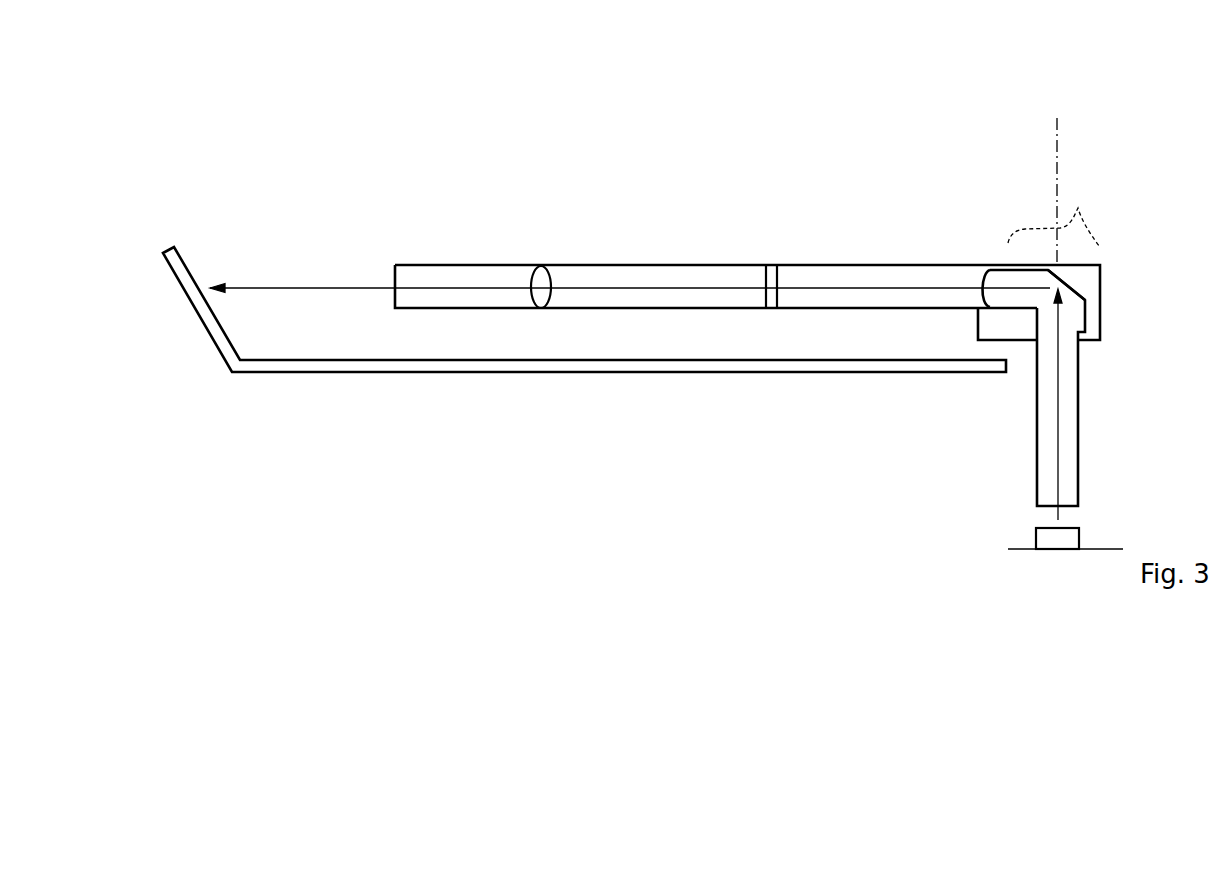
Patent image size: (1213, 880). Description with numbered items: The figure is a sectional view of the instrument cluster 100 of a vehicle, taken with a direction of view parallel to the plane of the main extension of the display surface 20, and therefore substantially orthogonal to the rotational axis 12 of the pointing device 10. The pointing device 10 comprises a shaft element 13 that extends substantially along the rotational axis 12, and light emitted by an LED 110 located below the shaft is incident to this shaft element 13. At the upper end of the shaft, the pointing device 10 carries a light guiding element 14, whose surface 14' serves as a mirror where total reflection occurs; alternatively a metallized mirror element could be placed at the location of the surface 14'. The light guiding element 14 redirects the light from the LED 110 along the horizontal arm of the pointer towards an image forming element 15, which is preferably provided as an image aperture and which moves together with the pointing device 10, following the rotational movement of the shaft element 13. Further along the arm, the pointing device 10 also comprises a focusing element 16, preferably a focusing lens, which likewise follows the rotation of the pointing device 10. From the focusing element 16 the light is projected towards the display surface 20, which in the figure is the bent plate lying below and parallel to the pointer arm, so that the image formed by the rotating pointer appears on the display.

The instrument cluster 100 is at (477, 137).
The pointing device 10 is at (1135, 265).
The rotational axis 12 is at (1055, 154).
The shaft element 13 is at (1054, 215).
The light guiding element 14 is at (967, 249).
The surface 14' is at (1129, 260).
The image forming element 15 is at (767, 277).
The focusing element 16 is at (538, 275).
The display surface 20 is at (218, 337).
The LED 110 is at (1043, 541).